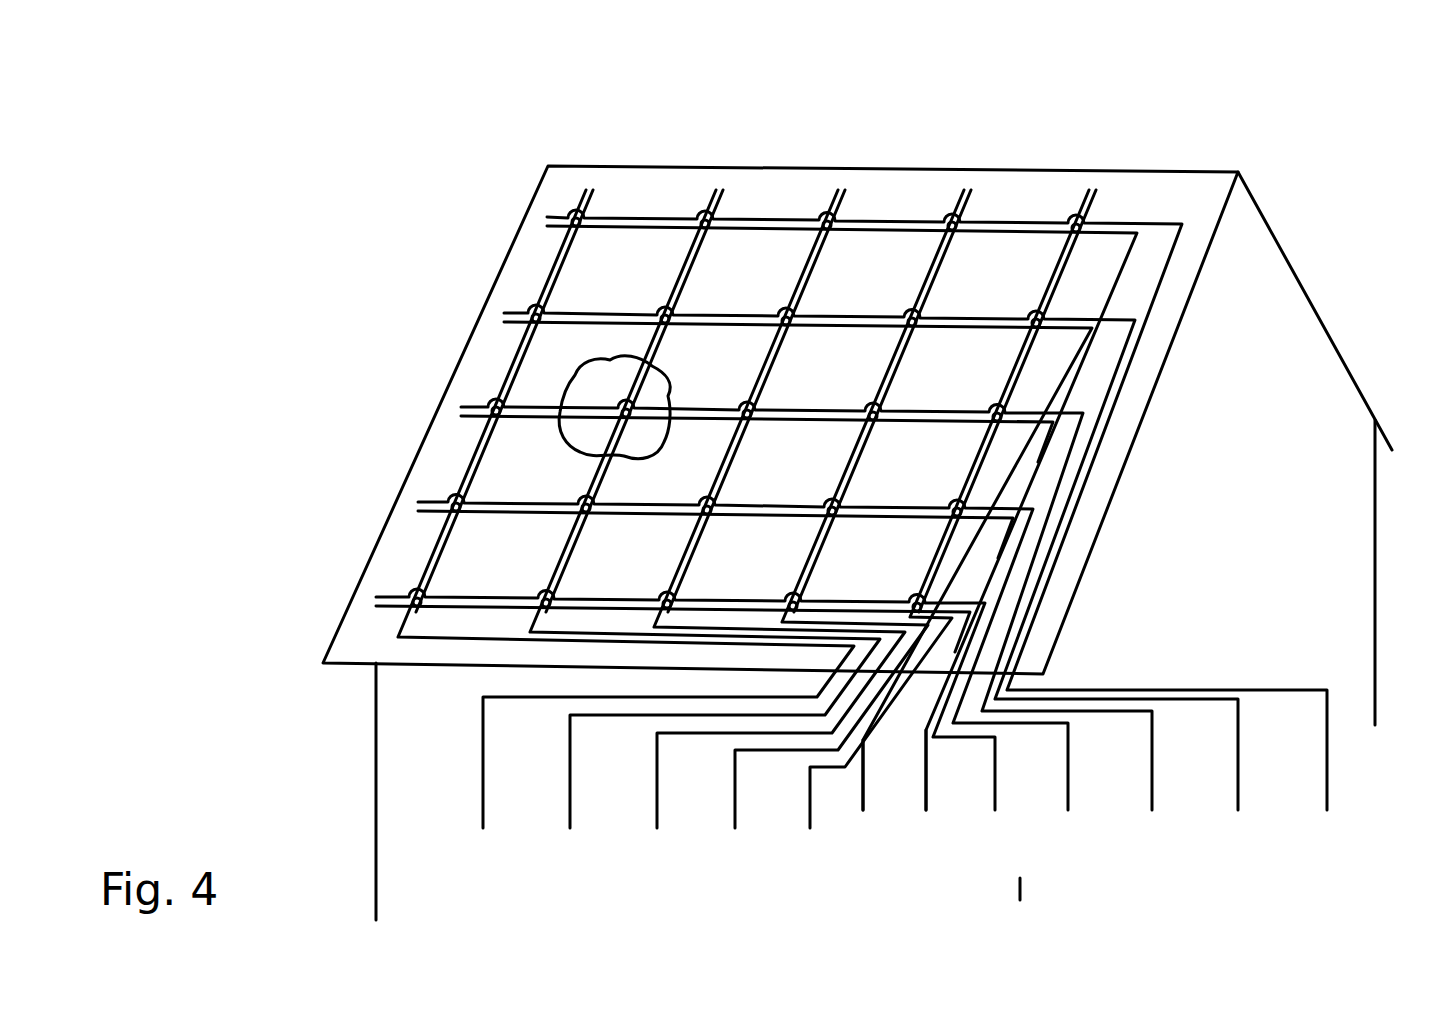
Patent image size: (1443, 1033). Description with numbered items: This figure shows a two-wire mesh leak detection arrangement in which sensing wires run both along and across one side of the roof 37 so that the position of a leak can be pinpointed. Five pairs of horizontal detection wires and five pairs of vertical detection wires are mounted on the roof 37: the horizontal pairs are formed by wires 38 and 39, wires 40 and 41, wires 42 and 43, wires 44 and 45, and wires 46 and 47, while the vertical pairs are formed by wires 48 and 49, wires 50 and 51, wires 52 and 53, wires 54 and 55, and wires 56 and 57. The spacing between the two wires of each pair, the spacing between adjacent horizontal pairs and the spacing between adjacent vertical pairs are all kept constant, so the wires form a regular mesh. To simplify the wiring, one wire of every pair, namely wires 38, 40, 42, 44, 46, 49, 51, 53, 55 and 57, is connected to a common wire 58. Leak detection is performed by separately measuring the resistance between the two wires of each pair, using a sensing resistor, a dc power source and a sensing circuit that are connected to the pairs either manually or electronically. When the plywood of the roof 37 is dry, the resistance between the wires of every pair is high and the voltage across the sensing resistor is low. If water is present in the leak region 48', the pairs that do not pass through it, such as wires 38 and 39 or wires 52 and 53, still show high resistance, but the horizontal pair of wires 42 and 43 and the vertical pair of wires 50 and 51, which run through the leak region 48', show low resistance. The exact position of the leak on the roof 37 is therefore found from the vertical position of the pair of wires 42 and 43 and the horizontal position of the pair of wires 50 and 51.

The roof 37 is at (1165, 190).
The detection wire 38 is at (352, 627).
The detection wire 39 is at (372, 600).
The detection wire 40 is at (400, 517).
The detection wire 41 is at (410, 504).
The detection wire 42 is at (453, 415).
The detection wire 43 is at (467, 407).
The detection wire 44 is at (497, 317).
The detection wire 45 is at (500, 303).
The detection wire 46 is at (538, 215).
The detection wire 47 is at (535, 195).
The detection wire 48 is at (626, 460).
The detection wire 49 is at (597, 180).
The detection wire 50 is at (710, 177).
The detection wire 51 is at (727, 177).
The detection wire 52 is at (835, 178).
The detection wire 53 is at (857, 177).
The detection wire 54 is at (978, 178).
The detection wire 55 is at (1003, 175).
The detection wire 56 is at (1105, 181).
The detection wire 57 is at (1117, 183).
The common wire 58 is at (1083, 377).
The leak region 48' is at (655, 393).